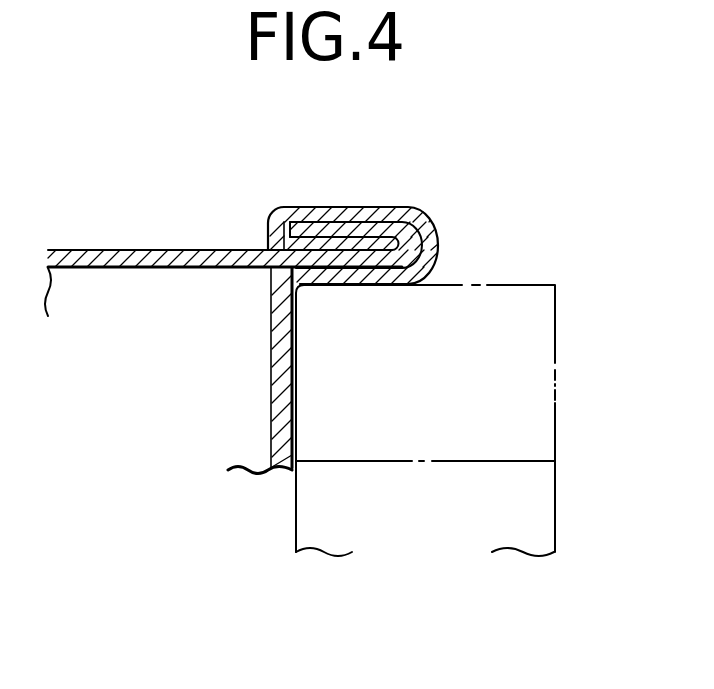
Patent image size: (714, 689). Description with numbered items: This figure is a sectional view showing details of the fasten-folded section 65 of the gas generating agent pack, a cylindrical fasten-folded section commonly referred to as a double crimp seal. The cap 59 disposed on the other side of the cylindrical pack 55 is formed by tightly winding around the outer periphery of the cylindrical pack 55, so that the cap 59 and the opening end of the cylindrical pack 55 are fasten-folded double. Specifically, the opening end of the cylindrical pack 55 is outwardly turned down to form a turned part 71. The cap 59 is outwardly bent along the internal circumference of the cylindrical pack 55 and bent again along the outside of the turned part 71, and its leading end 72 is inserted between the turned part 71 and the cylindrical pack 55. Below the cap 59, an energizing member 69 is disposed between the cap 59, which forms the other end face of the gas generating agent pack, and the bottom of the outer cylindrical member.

The cylindrical pack 55 is at (142, 250).
The fasten-folded section 65 is at (370, 207).
The turned part 71 is at (311, 228).
The leading end 72 is at (391, 247).
The cap 59 is at (272, 377).
The energizing member 69 is at (548, 366).